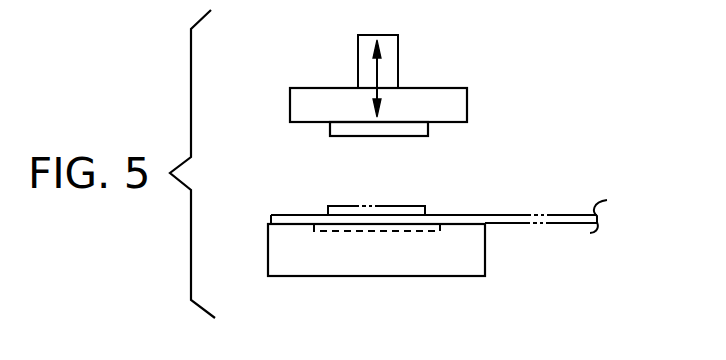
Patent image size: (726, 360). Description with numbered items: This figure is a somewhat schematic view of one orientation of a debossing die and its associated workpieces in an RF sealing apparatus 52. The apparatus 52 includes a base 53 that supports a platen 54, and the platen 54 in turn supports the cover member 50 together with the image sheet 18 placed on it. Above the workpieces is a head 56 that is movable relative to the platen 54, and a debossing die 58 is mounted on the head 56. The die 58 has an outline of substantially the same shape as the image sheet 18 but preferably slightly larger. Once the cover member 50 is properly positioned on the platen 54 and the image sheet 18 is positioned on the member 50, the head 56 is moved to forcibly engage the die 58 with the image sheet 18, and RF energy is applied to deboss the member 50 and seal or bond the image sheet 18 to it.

The RF sealing apparatus 52 is at (498, 64).
The head 56 is at (331, 88).
The debossing die 58 is at (423, 136).
The image sheet 18 is at (420, 206).
The platen 54 is at (318, 222).
The cover member 50 is at (528, 225).
The base 53 is at (288, 277).